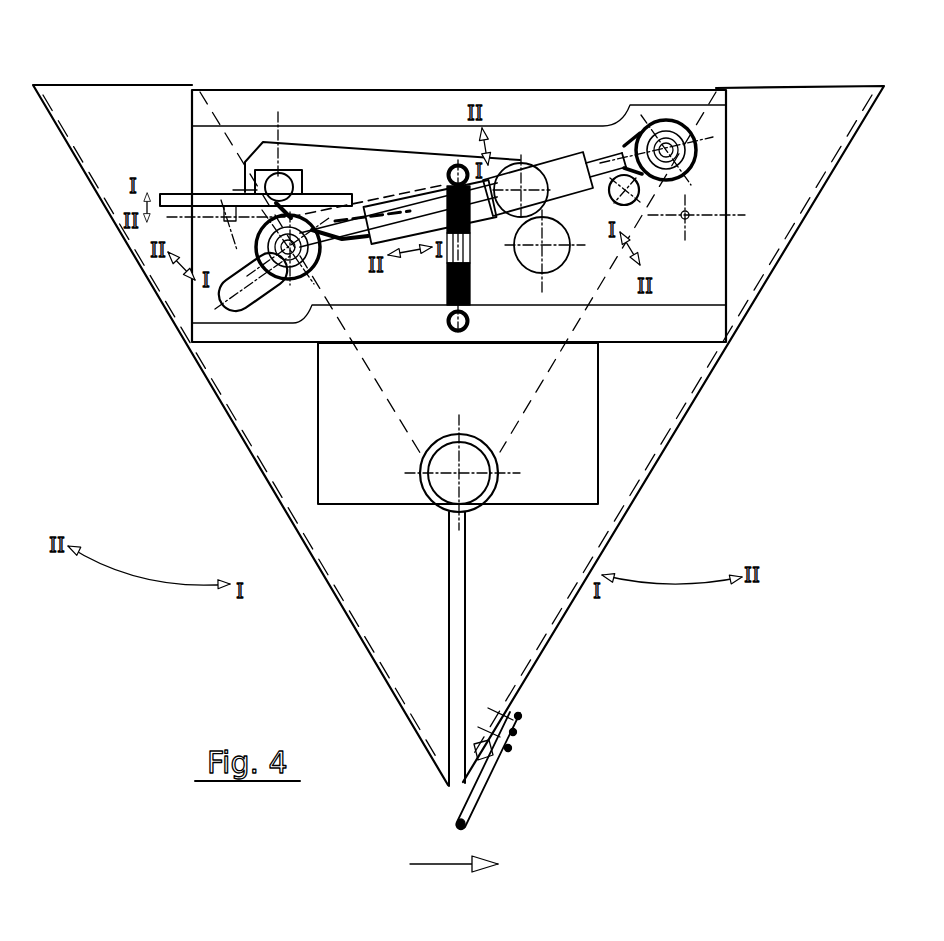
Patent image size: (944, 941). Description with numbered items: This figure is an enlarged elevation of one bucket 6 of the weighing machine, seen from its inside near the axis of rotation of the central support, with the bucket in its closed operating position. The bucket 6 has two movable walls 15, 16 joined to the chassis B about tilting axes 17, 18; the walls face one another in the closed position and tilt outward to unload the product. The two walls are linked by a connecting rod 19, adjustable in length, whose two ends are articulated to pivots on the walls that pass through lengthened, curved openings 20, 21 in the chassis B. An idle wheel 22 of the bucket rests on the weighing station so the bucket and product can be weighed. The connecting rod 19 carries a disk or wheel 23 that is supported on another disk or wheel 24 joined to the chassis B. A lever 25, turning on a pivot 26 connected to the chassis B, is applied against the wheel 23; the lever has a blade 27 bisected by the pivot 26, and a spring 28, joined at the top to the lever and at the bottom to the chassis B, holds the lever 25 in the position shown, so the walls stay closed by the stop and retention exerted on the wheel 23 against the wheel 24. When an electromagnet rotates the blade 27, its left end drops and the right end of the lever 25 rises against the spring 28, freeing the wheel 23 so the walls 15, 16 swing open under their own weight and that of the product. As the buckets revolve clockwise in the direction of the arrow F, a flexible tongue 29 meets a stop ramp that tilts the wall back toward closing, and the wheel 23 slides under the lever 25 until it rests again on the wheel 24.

The bucket 6 is at (653, 88).
The movable wall 15 is at (655, 395).
The movable wall 16 is at (243, 388).
The chassis B is at (340, 88).
The tilting axis 17 is at (688, 212).
The tilting axis 18 is at (233, 218).
The connecting rod 19 is at (566, 165).
The opening 20 is at (632, 205).
The opening 21 is at (254, 293).
The idle wheel 22 is at (443, 506).
The disk or wheel 23 is at (529, 178).
The disk or wheel 24 is at (528, 262).
The lever 25 is at (392, 162).
The pivot 26 is at (266, 170).
The blade 27 is at (168, 193).
The spring 28 is at (443, 283).
The tongue 29 is at (463, 828).
The arrow F is at (454, 852).